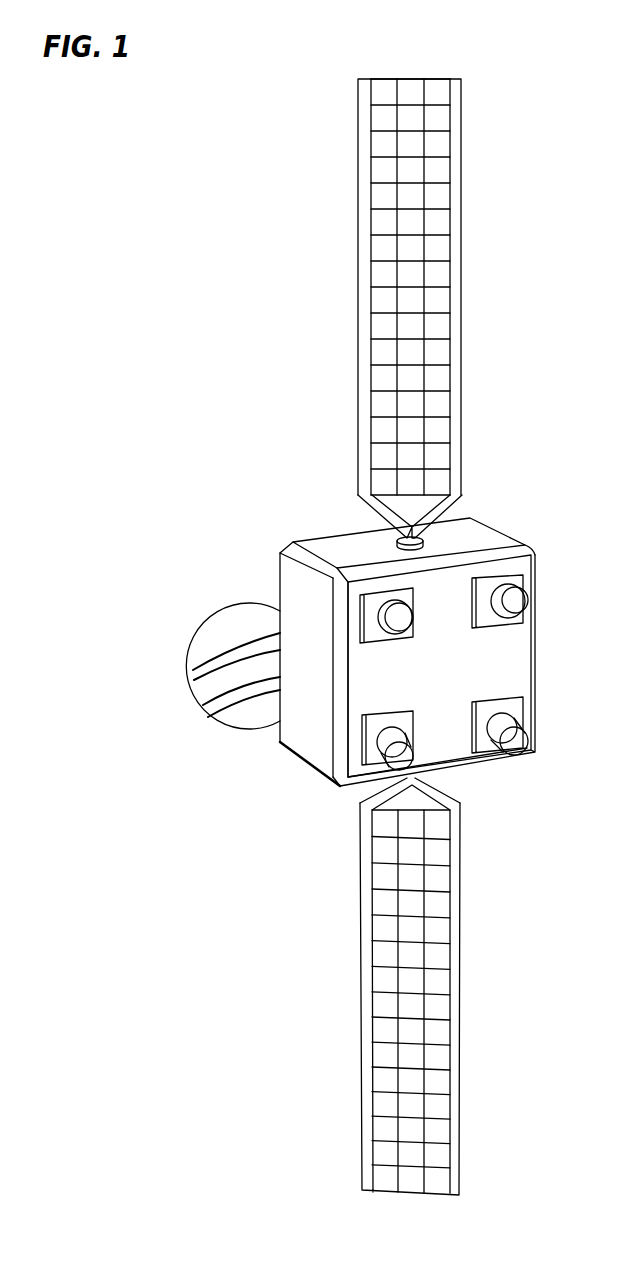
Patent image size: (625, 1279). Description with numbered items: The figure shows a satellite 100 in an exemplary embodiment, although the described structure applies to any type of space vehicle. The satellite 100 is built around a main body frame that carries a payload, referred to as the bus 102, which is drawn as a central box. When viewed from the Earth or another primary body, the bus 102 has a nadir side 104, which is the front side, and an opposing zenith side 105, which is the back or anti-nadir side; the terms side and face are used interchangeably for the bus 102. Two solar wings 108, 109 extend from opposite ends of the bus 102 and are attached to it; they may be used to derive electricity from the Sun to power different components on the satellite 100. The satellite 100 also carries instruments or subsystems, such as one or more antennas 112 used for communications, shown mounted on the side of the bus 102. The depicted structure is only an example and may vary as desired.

The satellite 100 is at (168, 381).
The bus 102 is at (323, 547).
The nadir side 104 is at (277, 550).
The zenith side 105 is at (511, 661).
The solar wing 108 is at (458, 275).
The solar wing 109 is at (455, 951).
The antenna 112 is at (212, 637).